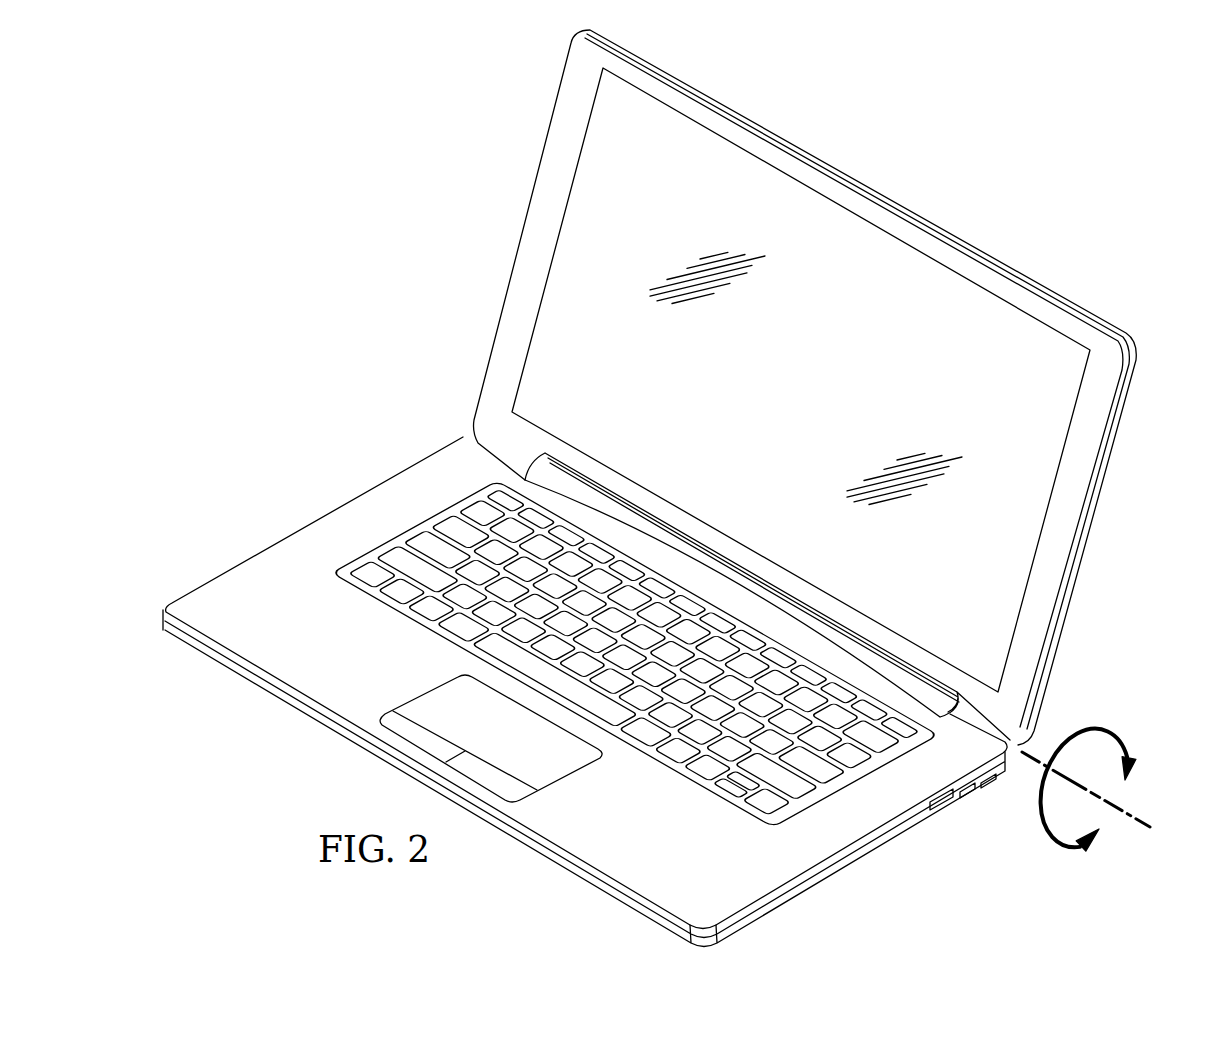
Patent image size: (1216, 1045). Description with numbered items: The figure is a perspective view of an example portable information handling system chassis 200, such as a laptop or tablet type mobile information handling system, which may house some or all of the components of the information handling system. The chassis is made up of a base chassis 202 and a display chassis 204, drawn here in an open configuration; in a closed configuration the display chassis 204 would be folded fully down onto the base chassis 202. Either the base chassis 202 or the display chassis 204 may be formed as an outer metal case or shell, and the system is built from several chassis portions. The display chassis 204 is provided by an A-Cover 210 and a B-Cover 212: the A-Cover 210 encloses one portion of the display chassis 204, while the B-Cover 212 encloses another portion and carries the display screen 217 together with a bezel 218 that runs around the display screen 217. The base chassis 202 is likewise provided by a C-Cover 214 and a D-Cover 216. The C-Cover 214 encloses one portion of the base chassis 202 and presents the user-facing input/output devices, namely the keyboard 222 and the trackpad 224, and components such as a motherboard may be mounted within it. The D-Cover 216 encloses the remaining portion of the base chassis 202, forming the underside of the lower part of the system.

The portable information handling system chassis 200 is at (1074, 179).
The base chassis 202 is at (838, 884).
The display chassis 204 is at (1112, 558).
The A-Cover 210 is at (1106, 468).
The B-Cover 212 is at (1058, 322).
The C-Cover 214 is at (235, 578).
The D-Cover 216 is at (288, 707).
The display screen 217 is at (883, 263).
The bezel 218 is at (724, 127).
The keyboard 222 is at (457, 507).
The trackpad 224 is at (552, 771).